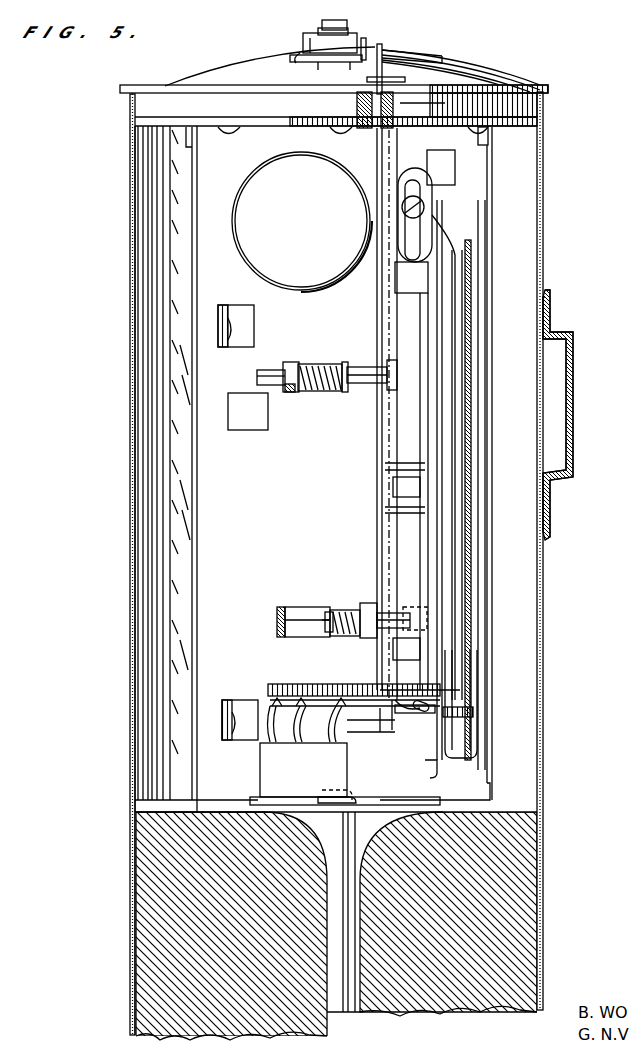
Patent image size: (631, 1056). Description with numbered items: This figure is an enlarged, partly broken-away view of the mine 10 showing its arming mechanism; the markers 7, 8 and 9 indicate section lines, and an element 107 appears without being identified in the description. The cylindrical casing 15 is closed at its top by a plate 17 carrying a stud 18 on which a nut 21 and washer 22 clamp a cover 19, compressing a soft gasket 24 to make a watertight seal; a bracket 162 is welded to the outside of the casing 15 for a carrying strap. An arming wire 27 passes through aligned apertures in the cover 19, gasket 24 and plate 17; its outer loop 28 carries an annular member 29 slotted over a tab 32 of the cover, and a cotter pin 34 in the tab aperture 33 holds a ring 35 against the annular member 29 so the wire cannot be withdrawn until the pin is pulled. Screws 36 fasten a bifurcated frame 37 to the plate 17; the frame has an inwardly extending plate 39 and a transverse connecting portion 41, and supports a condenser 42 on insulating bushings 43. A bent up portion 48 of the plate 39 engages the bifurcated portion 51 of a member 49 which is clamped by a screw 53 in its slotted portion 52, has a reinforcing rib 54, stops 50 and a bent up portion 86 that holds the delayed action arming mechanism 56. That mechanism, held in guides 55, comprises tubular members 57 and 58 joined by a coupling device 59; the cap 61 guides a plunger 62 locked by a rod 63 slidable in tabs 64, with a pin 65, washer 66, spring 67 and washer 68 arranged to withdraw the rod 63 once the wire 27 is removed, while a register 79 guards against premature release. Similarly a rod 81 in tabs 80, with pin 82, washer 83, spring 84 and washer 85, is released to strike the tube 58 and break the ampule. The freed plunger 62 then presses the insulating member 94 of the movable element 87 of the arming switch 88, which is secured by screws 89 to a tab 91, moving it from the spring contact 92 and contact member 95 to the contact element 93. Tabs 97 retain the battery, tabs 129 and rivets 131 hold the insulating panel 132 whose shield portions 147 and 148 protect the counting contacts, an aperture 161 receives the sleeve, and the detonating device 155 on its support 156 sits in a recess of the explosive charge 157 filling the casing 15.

The housing 10 is at (548, 178).
The casing 15 is at (132, 745).
The plate 17 is at (130, 126).
The stud or bolt 18 is at (343, 33).
The cover 19 is at (452, 75).
The nut 21 is at (310, 44).
The washer 22 is at (297, 58).
The gasket 24 is at (357, 102).
The arming wire 27 is at (376, 305).
The loop 28 is at (383, 53).
The annular member 29 is at (313, 62).
The tab 32 is at (379, 44).
The aperture 33 is at (364, 38).
The cotter pin 34 is at (345, 62).
The ring 35 is at (410, 55).
The screws 36 is at (226, 133).
The bifurcated frame 37 is at (496, 758).
The plate 39 is at (268, 456).
The transverse connecting portion 41 is at (424, 797).
The condenser 42 is at (236, 212).
The caps or bushings 43 is at (276, 165).
The bent up portion 48 is at (470, 712).
The member 49 is at (470, 477).
The tabs or stops 50 is at (452, 352).
The bifurcated portion 51 is at (462, 700).
The slotted portion 52 is at (428, 228).
The screw 53 is at (424, 212).
The reinforcing rib 54 is at (460, 292).
The clamps or guides 55 is at (395, 488).
The delayed action arming mechanism 56 is at (394, 576).
The tubular member 57 is at (390, 510).
The tubular member 58 is at (396, 418).
The coupling device 59 is at (398, 466).
The cap 61 is at (398, 700).
The plunger 62 is at (432, 692).
The rod 63 is at (306, 612).
The tabs 64 is at (281, 607).
The pin or bar 65 is at (324, 628).
The washer 66 is at (330, 612).
The spring 67 is at (344, 637).
The washer 68 is at (368, 603).
The section line 7 is at (458, 34).
The section line 8 is at (530, 378).
The section line 9 is at (530, 622).
The reduced cylindrical portion or register 79 is at (414, 608).
The tabs 80 is at (290, 362).
The rod 81 is at (270, 370).
The pin 82 is at (346, 362).
The washer 83 is at (350, 383).
The spring 84 is at (320, 391).
The washer 85 is at (288, 392).
The bent up portion 86 is at (402, 264).
The movable element 87 is at (380, 732).
The arming switch 88 is at (339, 746).
The screws 89 is at (316, 735).
The tab 91 is at (275, 684).
The spring contact 92 is at (404, 712).
The contact element 93 is at (394, 730).
The insulating member 94 is at (412, 708).
The contact member 95 is at (356, 698).
The tabs 97 is at (244, 394).
The box 107 is at (440, 172).
The tabs 129 is at (218, 338).
The rivets 131 is at (236, 330).
The panel 132 is at (238, 306).
The shield formed portion 147 is at (190, 513).
The shield formed portion 148 is at (172, 503).
The detonating device 155 is at (350, 850).
The support 156 is at (352, 790).
The explosive charge 157 is at (158, 915).
The aperture 161 is at (353, 732).
The bracket or strap 162 is at (573, 458).